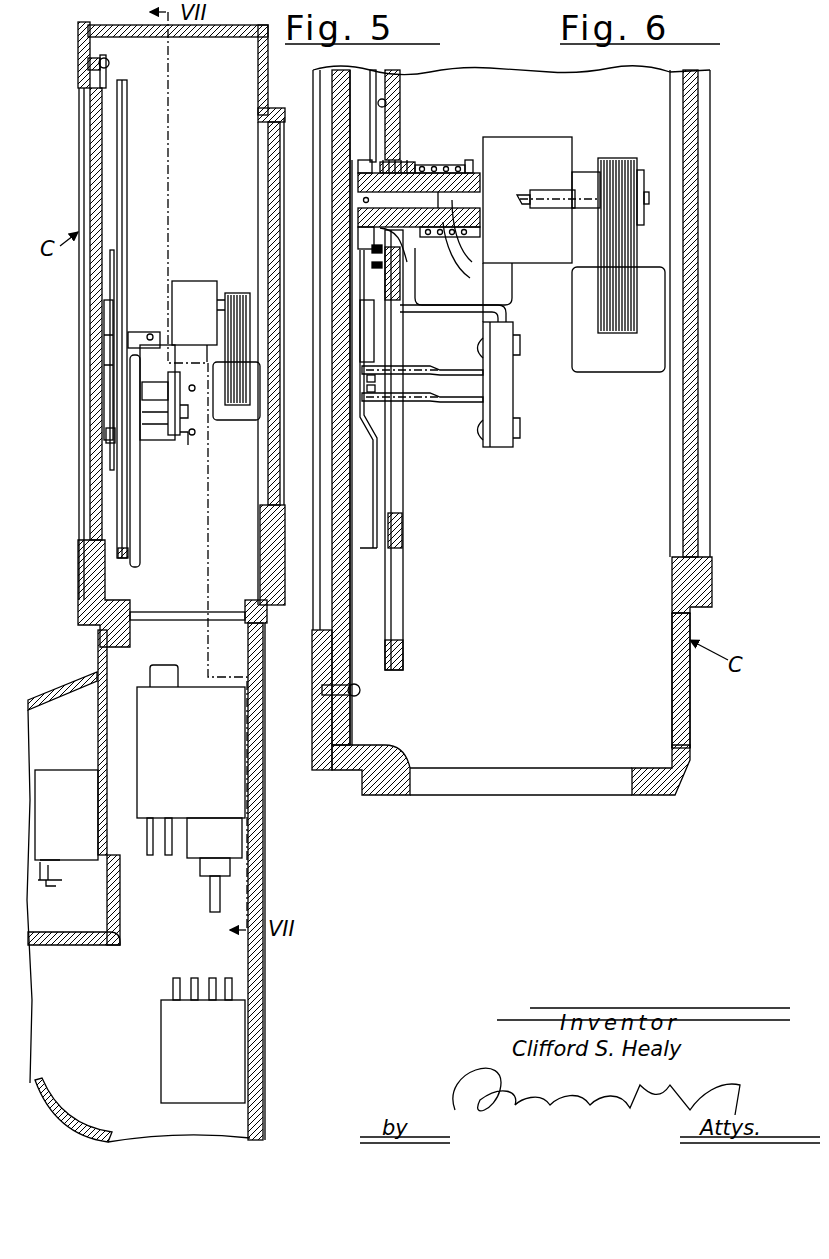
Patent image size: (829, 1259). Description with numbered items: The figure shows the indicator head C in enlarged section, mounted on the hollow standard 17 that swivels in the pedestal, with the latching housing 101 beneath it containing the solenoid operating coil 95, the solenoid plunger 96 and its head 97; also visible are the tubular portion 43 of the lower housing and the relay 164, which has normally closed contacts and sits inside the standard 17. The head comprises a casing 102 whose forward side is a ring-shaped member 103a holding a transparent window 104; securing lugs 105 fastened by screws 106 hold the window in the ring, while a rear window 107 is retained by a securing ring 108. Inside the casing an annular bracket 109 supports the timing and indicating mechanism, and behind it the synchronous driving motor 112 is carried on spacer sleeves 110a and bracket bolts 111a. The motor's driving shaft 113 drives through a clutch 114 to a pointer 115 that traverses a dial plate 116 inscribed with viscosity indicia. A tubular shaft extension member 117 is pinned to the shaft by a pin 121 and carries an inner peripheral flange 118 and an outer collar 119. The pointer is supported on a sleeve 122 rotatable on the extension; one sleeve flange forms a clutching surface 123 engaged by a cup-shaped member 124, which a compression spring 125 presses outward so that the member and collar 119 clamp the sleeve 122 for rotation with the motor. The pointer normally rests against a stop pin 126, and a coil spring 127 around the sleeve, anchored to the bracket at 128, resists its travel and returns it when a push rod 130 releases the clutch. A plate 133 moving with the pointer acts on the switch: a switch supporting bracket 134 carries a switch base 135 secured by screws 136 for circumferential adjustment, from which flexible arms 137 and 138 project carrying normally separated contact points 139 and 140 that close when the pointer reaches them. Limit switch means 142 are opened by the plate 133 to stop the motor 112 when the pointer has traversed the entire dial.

In FIG. 5, the hollow standard 17 is at (258, 895).
In FIG. 5, the tubular portion 43 is at (191, 788).
In FIG. 5, the operating coil 95 is at (65, 782).
In FIG. 5, the solenoid plunger 96 is at (50, 876).
In FIG. 5, the head 97 is at (63, 886).
In FIG. 5, the housing 101 is at (55, 670).
In FIG. 5, the casing 102 is at (280, 577).
In FIG. 6, the casing 102 is at (678, 755).
In FIG. 5, the ring-shaped member 103a is at (88, 42).
In FIG. 6, the ring-shaped member 103a is at (326, 664).
In FIG. 5, the transparent window 104 is at (97, 172).
In FIG. 6, the transparent window 104 is at (338, 606).
In FIG. 5, the securing lugs 105 is at (103, 84).
In FIG. 6, the securing lugs 105 is at (350, 670).
In FIG. 5, the screws 106 is at (104, 80).
In FIG. 6, the screws 106 is at (360, 690).
In FIG. 5, the window 107 is at (270, 182).
In FIG. 6, the window 107 is at (690, 270).
In FIG. 5, the securing ring 108 is at (270, 90).
In FIG. 6, the securing ring 108 is at (710, 577).
In FIG. 5, the annular bracket 109 is at (128, 535).
In FIG. 6, the annular bracket 109 is at (403, 532).
In FIG. 6, the spacer sleeves 110a is at (547, 194).
In FIG. 6, the bracket bolts 111a is at (527, 194).
In FIG. 5, the driving motor 112 is at (215, 281).
In FIG. 6, the driving motor 112 is at (575, 156).
In FIG. 6, the driving shaft 113 is at (478, 187).
In FIG. 6, the clutch 114 is at (410, 166).
In FIG. 5, the pointer 115 is at (112, 263).
In FIG. 6, the pointer 115 is at (370, 462).
In FIG. 5, the dial plate 116 is at (120, 148).
In FIG. 6, the dial plate 116 is at (382, 573).
In FIG. 6, the shaft extension member 117 is at (418, 200).
In FIG. 6, the peripheral flange 118 is at (478, 219).
In FIG. 6, the collar 119 is at (365, 175).
In FIG. 6, the pin 121 is at (472, 262).
In FIG. 6, the sleeve 122 is at (373, 224).
In FIG. 6, the clutching surface 123 is at (407, 226).
In FIG. 6, the cup-shaped member 124 is at (445, 168).
In FIG. 6, the compression spring 125 is at (474, 258).
In FIG. 5, the stop pin 126 is at (110, 434).
In FIG. 6, the coil spring 127 is at (405, 162).
In FIG. 6, the spring anchor 128 is at (386, 100).
In FIG. 5, the push rod 130 is at (136, 476).
In FIG. 5, the plate 133 is at (112, 365).
In FIG. 6, the plate 133 is at (367, 322).
In FIG. 5, the switch supporting bracket 134 is at (188, 415).
In FIG. 6, the switch supporting bracket 134 is at (465, 308).
In FIG. 6, the switch base 135 is at (495, 390).
In FIG. 5, the screws 136 is at (198, 440).
In FIG. 5, the contact supporting arm 137 is at (162, 392).
In FIG. 5, the contact supporting arm 138 is at (178, 452).
In FIG. 6, the contact supporting arm 138 is at (430, 401).
In FIG. 6, the contact point 139 is at (383, 378).
In FIG. 6, the contact point 140 is at (370, 395).
In FIG. 5, the limit switch means 142 is at (115, 343).
In FIG. 6, the limit switch means 142 is at (374, 284).
In FIG. 5, the relay 164 is at (203, 1040).